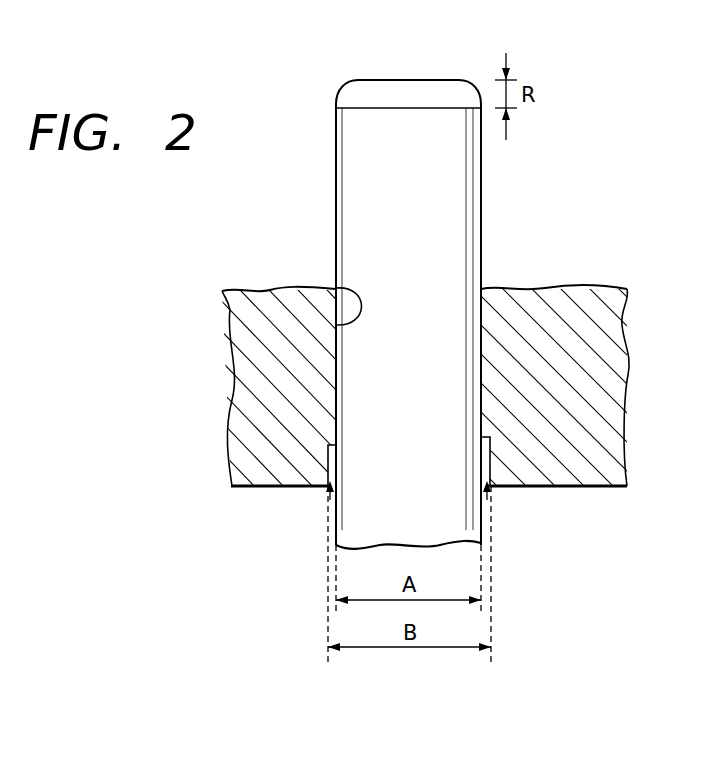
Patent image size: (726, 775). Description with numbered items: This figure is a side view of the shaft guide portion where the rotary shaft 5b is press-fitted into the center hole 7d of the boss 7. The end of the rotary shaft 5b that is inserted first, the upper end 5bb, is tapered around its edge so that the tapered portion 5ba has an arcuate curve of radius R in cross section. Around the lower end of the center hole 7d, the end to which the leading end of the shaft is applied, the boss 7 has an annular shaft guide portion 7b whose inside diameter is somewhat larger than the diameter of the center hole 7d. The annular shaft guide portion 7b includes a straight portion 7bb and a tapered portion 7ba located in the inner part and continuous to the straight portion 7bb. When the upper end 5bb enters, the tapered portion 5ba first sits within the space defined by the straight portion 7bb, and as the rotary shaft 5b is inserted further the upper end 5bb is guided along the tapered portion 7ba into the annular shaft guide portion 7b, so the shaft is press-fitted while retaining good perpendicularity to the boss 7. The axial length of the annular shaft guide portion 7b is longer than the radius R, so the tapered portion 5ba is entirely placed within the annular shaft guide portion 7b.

The rotary shaft 5b is at (458, 234).
The tapered portion 5ba is at (343, 82).
The upper end 5bb is at (410, 80).
The boss 7 is at (606, 291).
The annular shaft guide portion 7b is at (326, 499).
The tapered portion 7ba is at (337, 448).
The straight portion 7bb is at (335, 468).
The center hole 7d is at (336, 284).